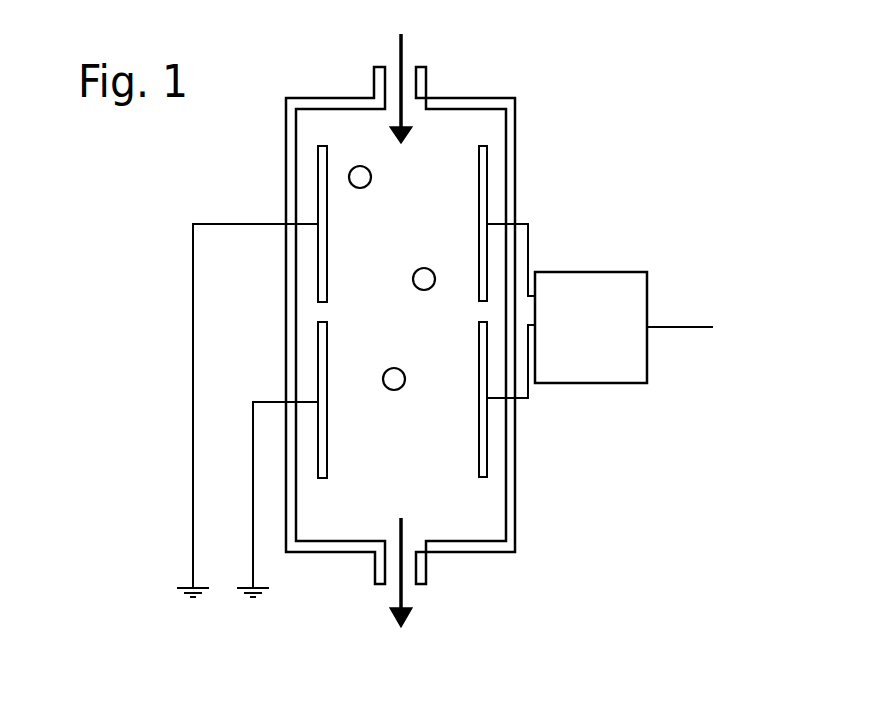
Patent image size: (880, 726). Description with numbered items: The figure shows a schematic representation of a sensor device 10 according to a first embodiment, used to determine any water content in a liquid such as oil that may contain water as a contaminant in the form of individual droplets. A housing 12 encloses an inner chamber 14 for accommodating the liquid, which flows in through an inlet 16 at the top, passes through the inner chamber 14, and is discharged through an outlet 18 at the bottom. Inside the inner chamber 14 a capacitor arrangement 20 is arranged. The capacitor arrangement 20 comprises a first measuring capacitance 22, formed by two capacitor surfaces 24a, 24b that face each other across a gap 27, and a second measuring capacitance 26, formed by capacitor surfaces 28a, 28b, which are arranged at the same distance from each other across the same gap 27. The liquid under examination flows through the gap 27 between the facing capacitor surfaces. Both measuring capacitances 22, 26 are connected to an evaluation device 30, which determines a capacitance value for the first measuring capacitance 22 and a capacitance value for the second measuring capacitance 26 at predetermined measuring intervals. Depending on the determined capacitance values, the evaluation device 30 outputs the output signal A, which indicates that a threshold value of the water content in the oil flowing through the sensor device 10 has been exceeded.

The sensor device 10 is at (625, 156).
The housing 12 is at (515, 118).
The inner chamber 14 is at (343, 519).
The inlet 16 is at (425, 83).
The outlet 18 is at (427, 568).
The capacitor arrangement 20 is at (295, 274).
The first measuring capacitance 22 is at (301, 177).
The capacitor surface 24a is at (488, 198).
The capacitor surface 24b is at (318, 212).
The second measuring capacitance 26 is at (300, 332).
The gap 27 is at (412, 321).
The capacitor surface 28a is at (477, 453).
The capacitor surface 28b is at (323, 448).
The evaluation device 30 is at (595, 337).